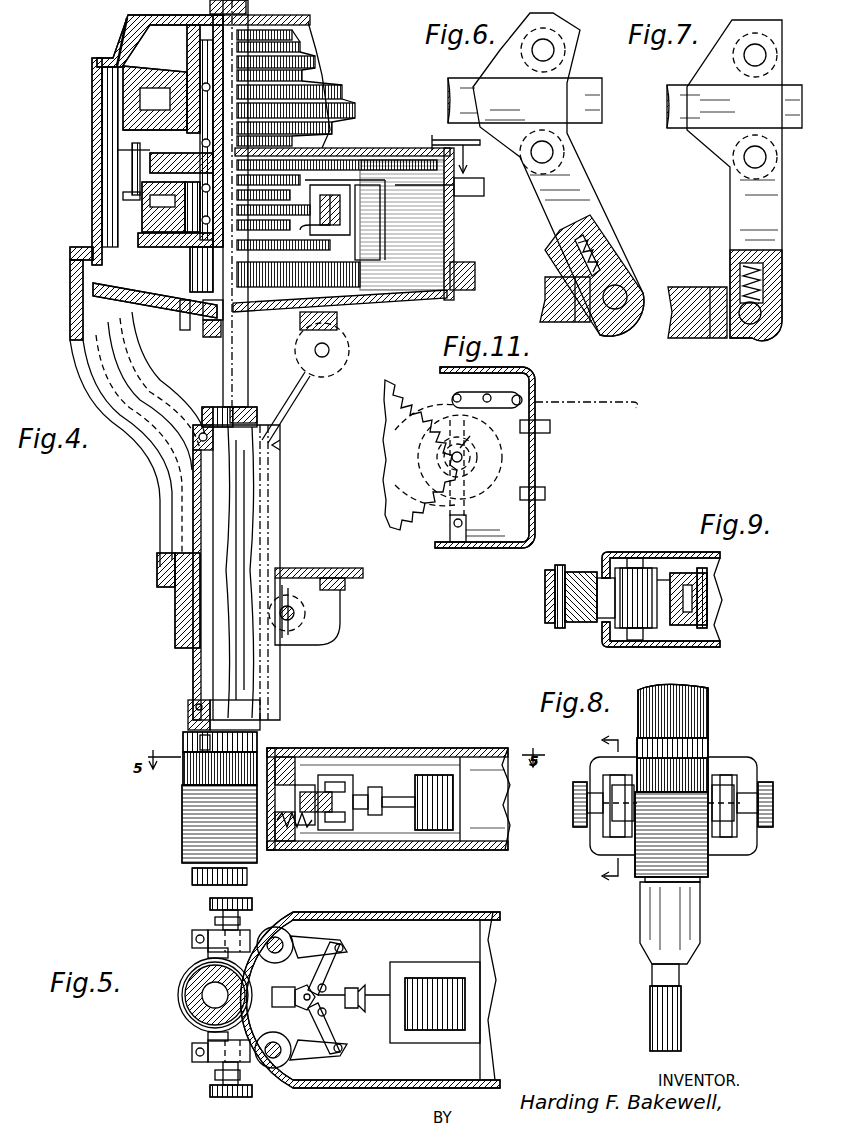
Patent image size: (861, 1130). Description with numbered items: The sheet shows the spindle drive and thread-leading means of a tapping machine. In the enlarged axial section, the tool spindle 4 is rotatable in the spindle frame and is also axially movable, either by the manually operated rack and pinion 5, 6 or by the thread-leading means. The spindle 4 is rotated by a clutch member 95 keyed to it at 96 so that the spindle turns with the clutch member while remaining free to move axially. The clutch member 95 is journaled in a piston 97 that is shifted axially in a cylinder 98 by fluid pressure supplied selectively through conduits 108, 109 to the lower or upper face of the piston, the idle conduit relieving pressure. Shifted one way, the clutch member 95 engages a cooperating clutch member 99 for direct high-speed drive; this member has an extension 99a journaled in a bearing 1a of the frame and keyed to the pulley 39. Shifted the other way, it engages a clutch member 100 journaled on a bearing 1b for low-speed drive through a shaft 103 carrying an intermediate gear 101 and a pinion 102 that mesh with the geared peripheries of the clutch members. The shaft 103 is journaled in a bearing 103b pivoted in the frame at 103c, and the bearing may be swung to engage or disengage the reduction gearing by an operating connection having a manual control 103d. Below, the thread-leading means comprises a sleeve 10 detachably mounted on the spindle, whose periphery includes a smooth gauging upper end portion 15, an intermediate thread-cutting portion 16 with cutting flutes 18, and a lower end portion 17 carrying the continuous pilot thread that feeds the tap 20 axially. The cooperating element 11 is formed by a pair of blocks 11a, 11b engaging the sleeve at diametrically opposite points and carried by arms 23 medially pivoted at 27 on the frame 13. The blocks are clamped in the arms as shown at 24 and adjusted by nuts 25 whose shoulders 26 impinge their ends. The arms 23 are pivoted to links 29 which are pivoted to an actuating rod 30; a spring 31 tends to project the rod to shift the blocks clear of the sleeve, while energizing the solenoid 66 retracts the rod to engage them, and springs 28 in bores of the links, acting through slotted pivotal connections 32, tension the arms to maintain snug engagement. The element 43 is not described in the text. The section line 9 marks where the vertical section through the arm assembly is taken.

In FIG. 4, the bearing 1a is at (185, 121).
In FIG. 4, the bearing 1b is at (208, 320).
In FIG. 4, the tool spindle 4 is at (226, 364).
In FIG. 4, the rack 5 is at (280, 446).
In FIG. 4, the pinion 6 is at (300, 614).
In FIG. 8, the section line 9 is at (603, 809).
In FIG. 5, the sleeve 10 is at (178, 1006).
In FIG. 4, the cooperating element 11 is at (474, 159).
In FIG. 5, the block 11a is at (207, 945).
In FIG. 9, the block 11a is at (588, 572).
In FIG. 8, the block 11a is at (606, 795).
In FIG. 5, the block 11b is at (207, 1044).
In FIG. 8, the block 11b is at (742, 795).
In FIG. 4, the frame 13 is at (370, 752).
In FIG. 5, the frame 13 is at (380, 918).
In FIG. 9, the frame 13 is at (686, 556).
In FIG. 8, the frame 13 is at (732, 762).
In FIG. 4, the upper end portion 15 is at (202, 742).
In FIG. 8, the upper end portion 15 is at (700, 752).
In FIG. 4, the thread-cutting portion 16 is at (184, 770).
In FIG. 8, the thread-cutting portion 16 is at (660, 762).
In FIG. 4, the lower end portion 17 is at (190, 826).
In FIG. 8, the lower end portion 17 is at (705, 874).
In FIG. 4, the cutting flutes 18 is at (206, 752).
In FIG. 8, the tapping tool 20 is at (682, 992).
In FIG. 4, the supporting arm 23 is at (332, 775).
In FIG. 5, the supporting arm 23 is at (250, 932).
In FIG. 6, the supporting arm 23 is at (545, 285).
In FIG. 7, the supporting arm 23 is at (694, 338).
In FIG. 9, the supporting arm 23 is at (612, 612).
In FIG. 8, the supporting arm 23 is at (614, 822).
In FIG. 9, the clamp 24 is at (550, 590).
In FIG. 5, the nut 25 is at (252, 905).
In FIG. 5, the shoulder 26 is at (215, 921).
In FIG. 4, the pivot 27 is at (284, 762).
In FIG. 5, the pivot 27 is at (280, 940).
In FIG. 9, the pivot 27 is at (635, 558).
In FIG. 6, the spring 28 is at (598, 245).
In FIG. 7, the spring 28 is at (740, 270).
In FIG. 5, the link 29 is at (330, 960).
In FIG. 6, the link 29 is at (562, 40).
In FIG. 7, the link 29 is at (770, 42).
In FIG. 9, the link 29 is at (710, 600).
In FIG. 4, the actuating rod 30 is at (310, 790).
In FIG. 5, the actuating rod 30 is at (308, 992).
In FIG. 6, the actuating rod 30 is at (575, 92).
In FIG. 7, the actuating rod 30 is at (708, 132).
In FIG. 4, the spring 31 is at (300, 846).
In FIG. 6, the slotted pivotal connection 32 is at (622, 315).
In FIG. 7, the slotted pivotal connection 32 is at (752, 325).
In FIG. 9, the slotted pivotal connection 32 is at (704, 568).
In FIG. 4, the pulley 39 is at (305, 92).
In FIG. 4, the belt pulley 43 is at (276, 410).
In FIG. 4, the solenoid 66 is at (435, 775).
In FIG. 5, the solenoid 66 is at (436, 978).
In FIG. 4, the clutch member 95 is at (138, 238).
In FIG. 4, the key 96 is at (180, 295).
In FIG. 4, the piston 97 is at (160, 215).
In FIG. 4, the cylinder 98 is at (160, 190).
In FIG. 4, the clutch member 99 is at (168, 164).
In FIG. 4, the extension 99a is at (197, 107).
In FIG. 4, the clutch member 100 is at (70, 312).
In FIG. 4, the intermediate gear 101 is at (360, 150).
In FIG. 11, the intermediate gear 101 is at (420, 455).
In FIG. 4, the pinion 102 is at (330, 298).
In FIG. 4, the shaft 103 is at (342, 220).
In FIG. 11, the shaft 103 is at (479, 436).
In FIG. 4, the bearing 103b is at (371, 222).
In FIG. 11, the bearing 103b is at (462, 462).
In FIG. 11, the pivot 103c is at (457, 548).
In FIG. 4, the manual control 103d is at (440, 138).
In FIG. 11, the manual control 103d is at (523, 398).
In FIG. 4, the conduit 108 is at (346, 210).
In FIG. 11, the conduit 108 is at (545, 493).
In FIG. 4, the conduit 109 is at (476, 196).
In FIG. 11, the conduit 109 is at (550, 428).